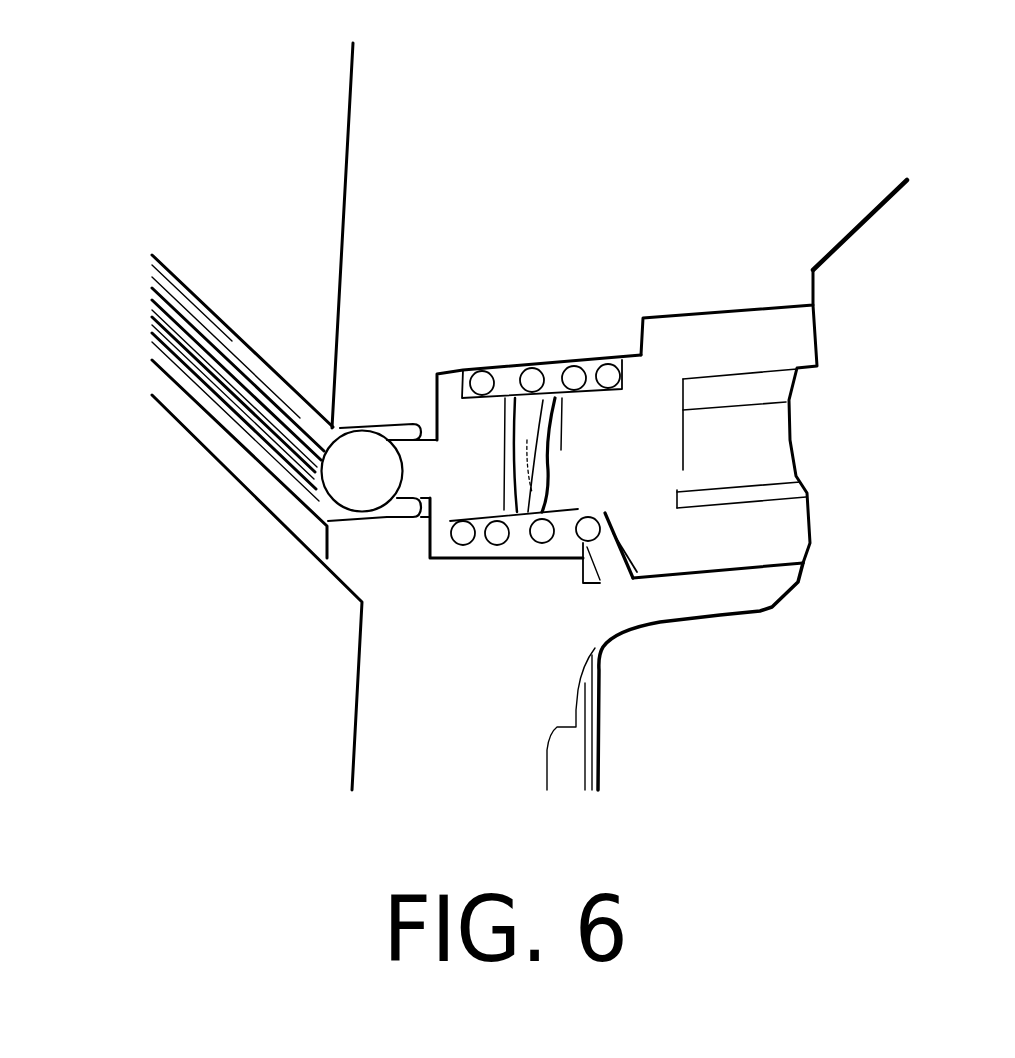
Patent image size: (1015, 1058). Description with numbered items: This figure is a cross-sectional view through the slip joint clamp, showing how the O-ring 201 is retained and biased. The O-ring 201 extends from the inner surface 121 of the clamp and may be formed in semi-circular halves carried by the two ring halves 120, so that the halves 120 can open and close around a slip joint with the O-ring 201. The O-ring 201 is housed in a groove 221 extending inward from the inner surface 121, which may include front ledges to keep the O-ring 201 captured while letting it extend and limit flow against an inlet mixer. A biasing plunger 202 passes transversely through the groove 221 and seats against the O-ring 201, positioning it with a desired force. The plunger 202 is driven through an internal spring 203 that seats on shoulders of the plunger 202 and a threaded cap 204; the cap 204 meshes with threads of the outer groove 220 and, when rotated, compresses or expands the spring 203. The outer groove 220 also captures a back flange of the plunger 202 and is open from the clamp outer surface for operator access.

The ring halves 120 is at (833, 187).
The inner surface 121 is at (325, 698).
The O-ring 201 is at (350, 462).
The biasing plunger 202 is at (463, 490).
The internal spring 203 is at (527, 437).
The threaded cap 204 is at (733, 343).
The outer groove 220 is at (737, 570).
The groove 221 is at (385, 427).